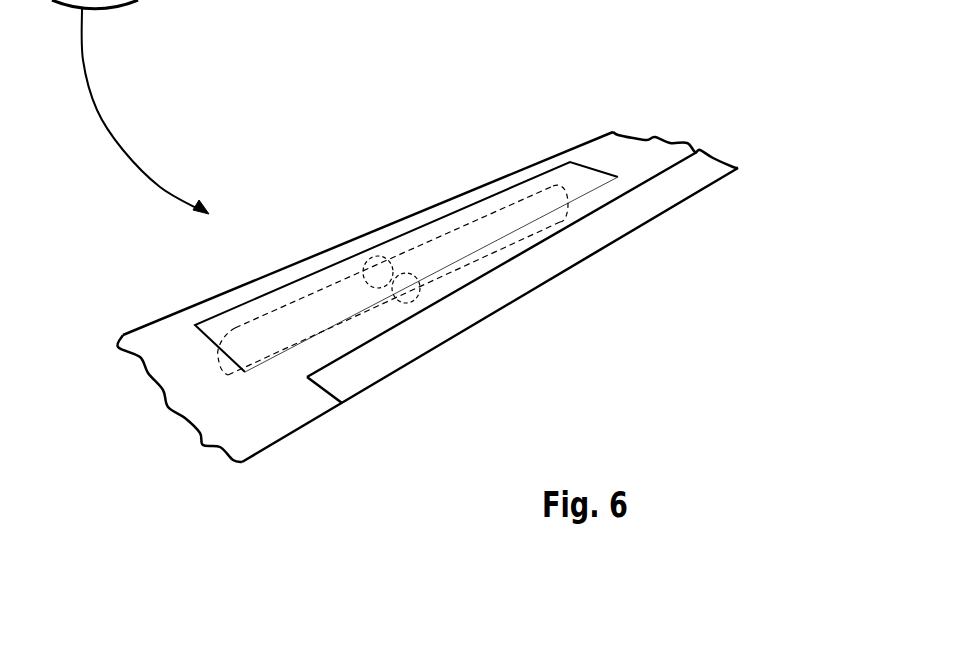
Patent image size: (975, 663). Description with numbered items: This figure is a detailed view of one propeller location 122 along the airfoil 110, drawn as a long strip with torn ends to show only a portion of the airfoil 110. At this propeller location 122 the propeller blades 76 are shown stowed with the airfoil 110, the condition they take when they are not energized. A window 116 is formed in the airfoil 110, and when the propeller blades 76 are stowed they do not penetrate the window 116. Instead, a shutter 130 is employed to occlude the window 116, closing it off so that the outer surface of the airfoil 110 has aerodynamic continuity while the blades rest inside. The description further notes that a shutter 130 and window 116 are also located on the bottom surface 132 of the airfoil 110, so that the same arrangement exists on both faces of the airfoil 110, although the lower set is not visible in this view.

The airfoil 110 is at (631, 163).
The propeller location 122 is at (722, 210).
The window 116 is at (208, 318).
The shutter 130 is at (317, 293).
The propeller blades 76 is at (530, 217).
The bottom surface 132 is at (285, 360).